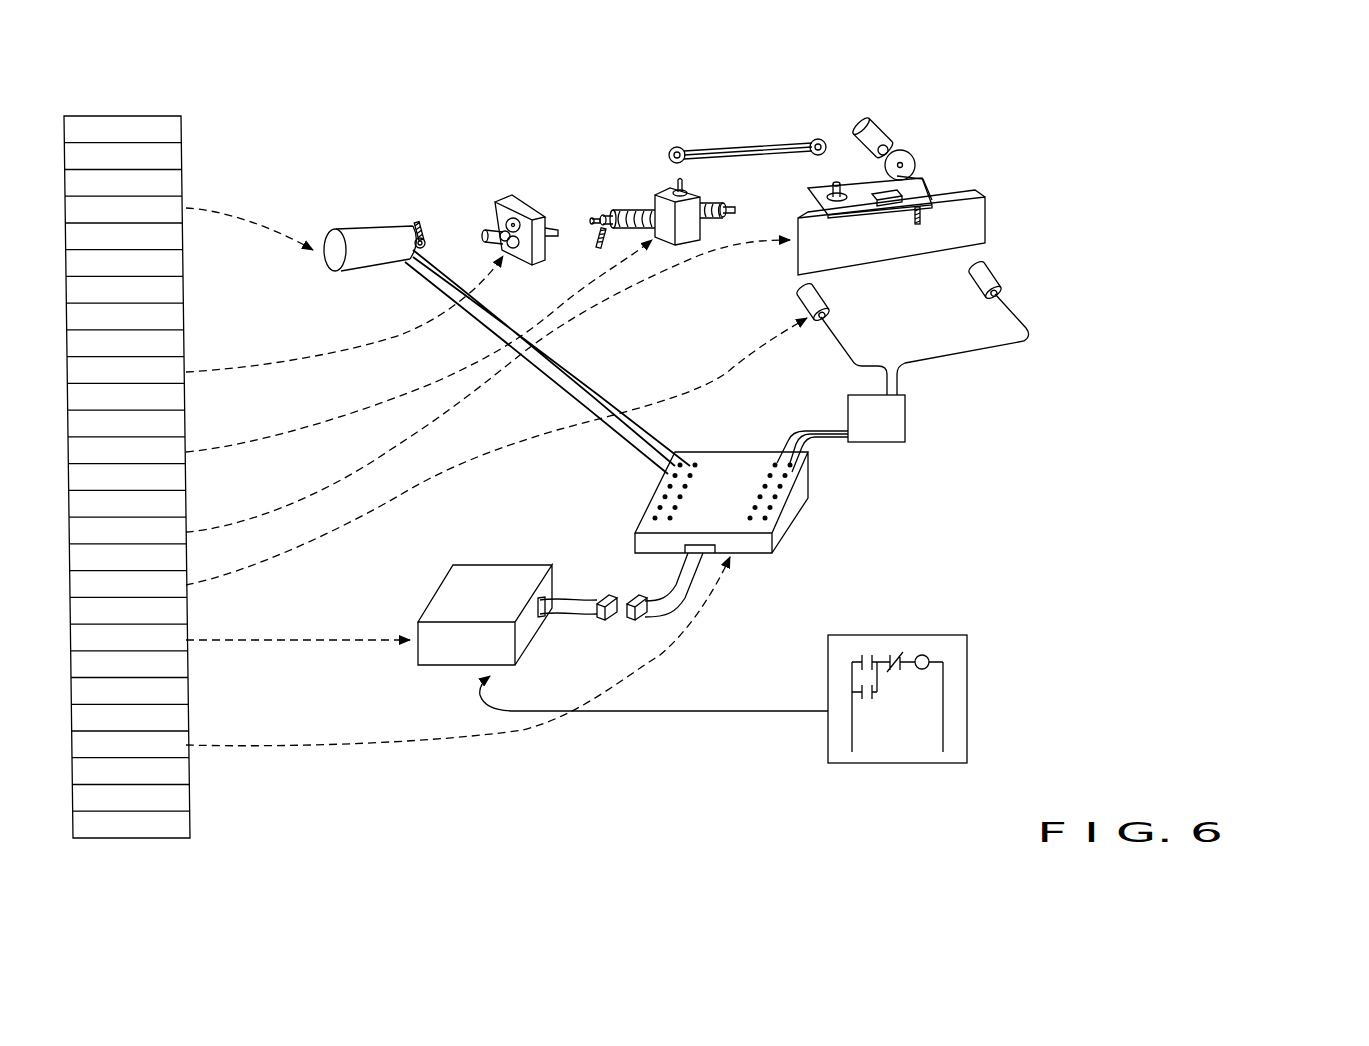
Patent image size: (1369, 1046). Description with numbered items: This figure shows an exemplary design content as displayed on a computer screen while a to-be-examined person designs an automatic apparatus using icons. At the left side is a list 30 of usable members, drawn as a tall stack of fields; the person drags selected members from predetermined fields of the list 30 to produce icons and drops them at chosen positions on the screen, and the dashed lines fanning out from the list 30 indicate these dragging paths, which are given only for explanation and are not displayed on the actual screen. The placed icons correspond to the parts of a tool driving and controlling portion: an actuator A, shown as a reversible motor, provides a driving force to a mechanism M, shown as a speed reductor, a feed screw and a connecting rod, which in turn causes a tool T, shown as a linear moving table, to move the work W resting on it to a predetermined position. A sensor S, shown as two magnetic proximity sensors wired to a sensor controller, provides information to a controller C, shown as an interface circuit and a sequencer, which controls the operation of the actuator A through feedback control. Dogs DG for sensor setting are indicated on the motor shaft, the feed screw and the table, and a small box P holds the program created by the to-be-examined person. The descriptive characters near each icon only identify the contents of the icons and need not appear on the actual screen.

The list 30 is at (120, 116).
The actuator A is at (312, 266).
The mechanism M is at (642, 203).
The tool T is at (1029, 195).
The work W is at (892, 177).
The sensor S is at (1002, 365).
The controller C is at (660, 558).
The program P is at (897, 687).
The dogs for sensor setting DG is at (668, 234).